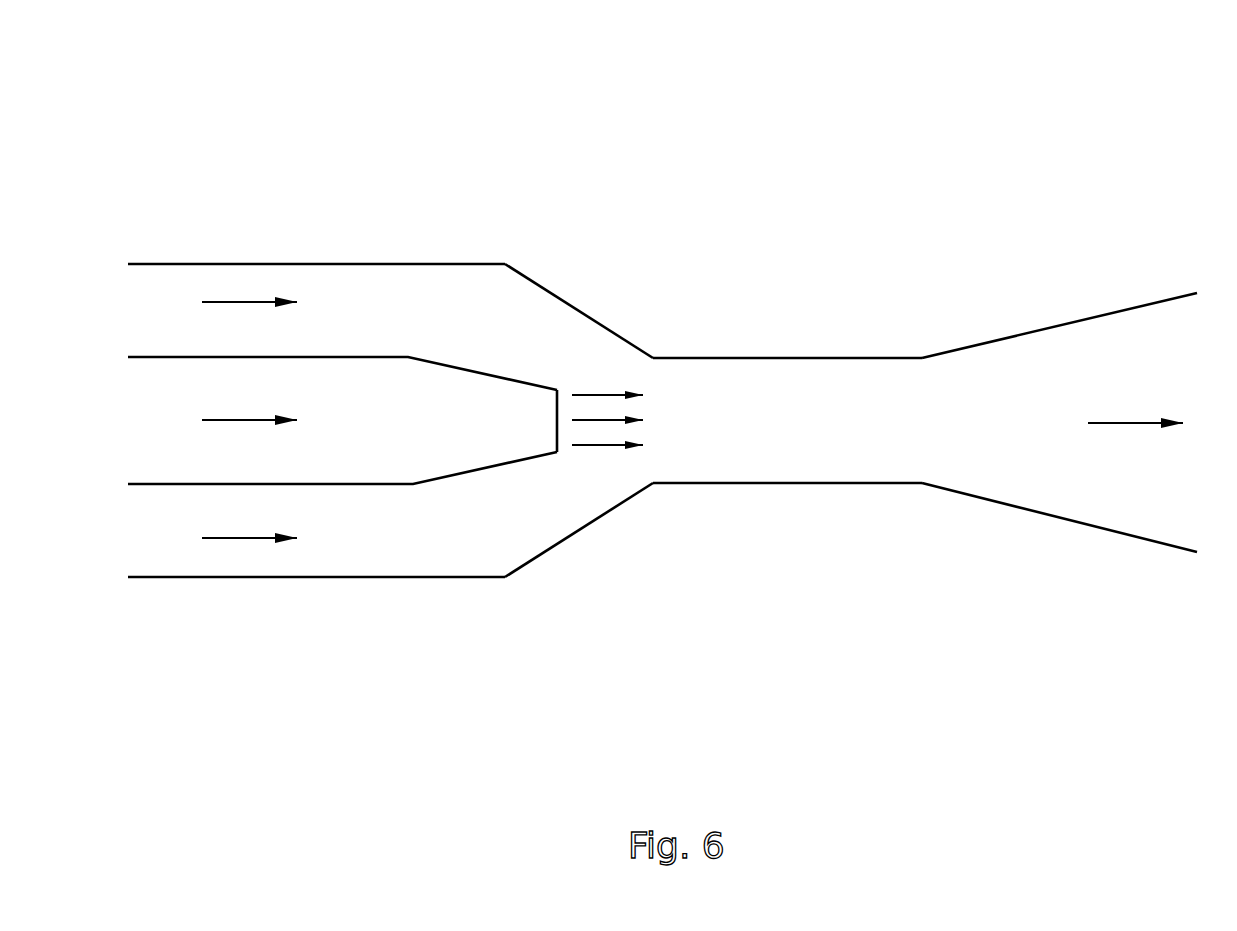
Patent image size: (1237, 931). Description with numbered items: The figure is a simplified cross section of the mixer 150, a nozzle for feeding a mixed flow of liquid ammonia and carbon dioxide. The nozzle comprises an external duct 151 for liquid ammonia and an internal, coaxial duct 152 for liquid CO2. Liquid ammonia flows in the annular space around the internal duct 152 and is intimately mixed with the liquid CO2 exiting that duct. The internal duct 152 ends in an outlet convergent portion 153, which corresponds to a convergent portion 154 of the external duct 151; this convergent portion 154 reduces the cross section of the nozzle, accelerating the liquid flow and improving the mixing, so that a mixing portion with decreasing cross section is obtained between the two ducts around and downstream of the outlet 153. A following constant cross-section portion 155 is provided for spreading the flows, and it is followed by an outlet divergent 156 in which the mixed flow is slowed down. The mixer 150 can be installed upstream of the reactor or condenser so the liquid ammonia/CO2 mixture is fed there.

The mixer 150 is at (845, 223).
The external duct 151 is at (307, 283).
The internal coaxial duct 152 is at (407, 373).
The outlet convergent portion 153 is at (542, 432).
The convergent portion 154 is at (562, 317).
The constant cross-section portion 155 is at (829, 473).
The outlet divergent 156 is at (1077, 505).